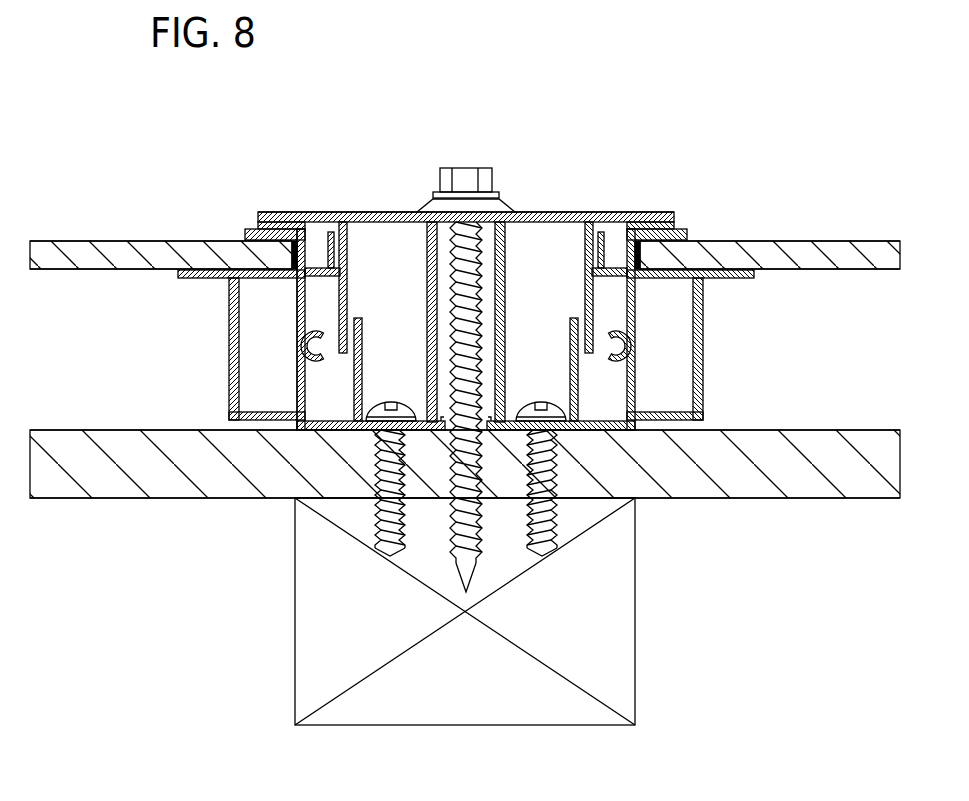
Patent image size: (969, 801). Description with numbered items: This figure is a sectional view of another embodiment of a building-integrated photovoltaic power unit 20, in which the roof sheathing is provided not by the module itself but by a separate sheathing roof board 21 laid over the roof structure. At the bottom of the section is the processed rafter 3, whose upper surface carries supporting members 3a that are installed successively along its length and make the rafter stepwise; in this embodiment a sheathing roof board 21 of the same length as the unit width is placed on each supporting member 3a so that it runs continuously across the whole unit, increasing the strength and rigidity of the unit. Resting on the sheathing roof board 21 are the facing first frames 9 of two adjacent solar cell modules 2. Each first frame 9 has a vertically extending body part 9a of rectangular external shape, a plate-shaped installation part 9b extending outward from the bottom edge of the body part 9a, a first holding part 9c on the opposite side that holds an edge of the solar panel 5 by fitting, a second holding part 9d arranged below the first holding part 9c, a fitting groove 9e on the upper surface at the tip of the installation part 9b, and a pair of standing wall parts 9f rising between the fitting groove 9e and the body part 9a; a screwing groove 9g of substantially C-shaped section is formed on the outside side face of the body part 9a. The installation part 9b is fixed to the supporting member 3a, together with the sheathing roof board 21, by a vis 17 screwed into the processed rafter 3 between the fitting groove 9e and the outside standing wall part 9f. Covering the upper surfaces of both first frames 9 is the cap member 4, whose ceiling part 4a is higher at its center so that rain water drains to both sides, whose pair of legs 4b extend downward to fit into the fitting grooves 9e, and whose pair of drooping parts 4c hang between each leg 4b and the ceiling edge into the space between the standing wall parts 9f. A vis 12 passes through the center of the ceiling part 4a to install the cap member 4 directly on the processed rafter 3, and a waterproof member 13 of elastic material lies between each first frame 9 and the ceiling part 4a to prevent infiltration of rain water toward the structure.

The building-integrated photovoltaic power unit 20 is at (766, 100).
The solar cell module 2 is at (99, 234).
The solar panel 5 is at (46, 242).
The processed rafter 3 is at (638, 681).
The supporting member 3a is at (292, 490).
The sheathing roof board 21 is at (817, 484).
The cap member 4 is at (566, 211).
The ceiling part 4a is at (548, 212).
The leg 4b is at (427, 372).
The drooping part 4c is at (348, 236).
The waterproof member 13 is at (278, 212).
The first frame 9 is at (308, 241).
The body part 9a is at (229, 360).
The installation part 9b is at (357, 431).
The first holding part 9c is at (262, 240).
The second holding part 9d is at (216, 279).
The fitting groove 9e is at (434, 431).
The standing wall part 9f is at (360, 320).
The screwing groove 9g is at (307, 348).
The vis 12 is at (466, 168).
The vis 17 is at (390, 557).